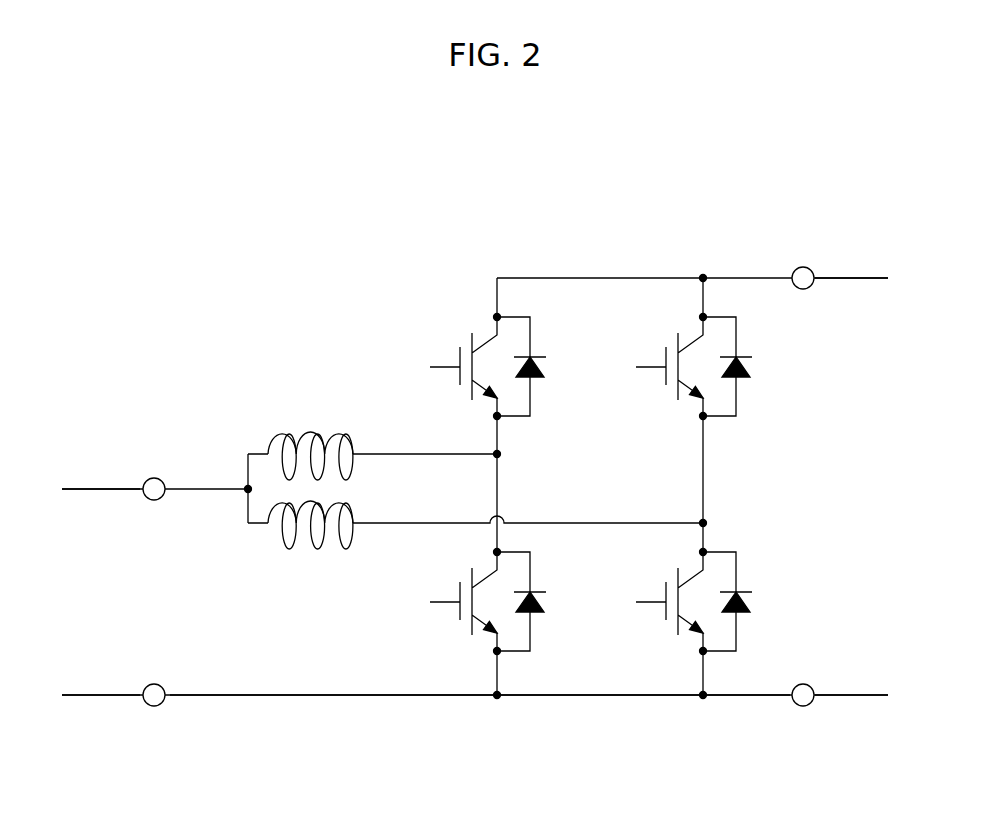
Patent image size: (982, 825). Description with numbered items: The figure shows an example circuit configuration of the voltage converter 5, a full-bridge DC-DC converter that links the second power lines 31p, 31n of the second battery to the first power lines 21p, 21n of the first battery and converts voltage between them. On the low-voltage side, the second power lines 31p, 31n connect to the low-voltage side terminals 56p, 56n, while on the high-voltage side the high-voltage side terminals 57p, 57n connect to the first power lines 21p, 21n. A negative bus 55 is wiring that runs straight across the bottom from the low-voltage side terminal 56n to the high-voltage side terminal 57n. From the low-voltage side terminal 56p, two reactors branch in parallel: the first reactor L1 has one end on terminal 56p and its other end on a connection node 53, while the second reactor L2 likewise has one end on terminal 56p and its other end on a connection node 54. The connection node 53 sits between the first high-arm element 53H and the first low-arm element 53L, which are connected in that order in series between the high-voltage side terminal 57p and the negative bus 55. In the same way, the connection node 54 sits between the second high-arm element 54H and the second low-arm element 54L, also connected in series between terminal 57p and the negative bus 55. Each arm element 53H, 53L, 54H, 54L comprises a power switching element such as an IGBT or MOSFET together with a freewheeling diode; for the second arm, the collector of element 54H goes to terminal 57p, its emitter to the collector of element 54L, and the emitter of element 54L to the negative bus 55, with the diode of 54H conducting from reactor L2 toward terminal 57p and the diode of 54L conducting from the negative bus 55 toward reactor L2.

The voltage converter 5 is at (486, 439).
The first high-arm element 53H is at (430, 346).
The first low-arm element 53L is at (414, 598).
The second high-arm element 54H is at (632, 354).
The second low-arm element 54L is at (631, 596).
The connection node 53 is at (470, 486).
The connection node 54 is at (680, 486).
The first reactor L1 is at (324, 432).
The second reactor L2 is at (313, 548).
The second power line 31p is at (78, 489).
The second power line 31n is at (78, 695).
The low-voltage side terminal 56p is at (157, 480).
The low-voltage side terminal 56n is at (157, 686).
The negative bus 55 is at (377, 695).
The high-voltage side terminal 57p is at (806, 268).
The high-voltage side terminal 57n is at (806, 686).
The first power line 21p is at (868, 278).
The first power line 21n is at (872, 695).